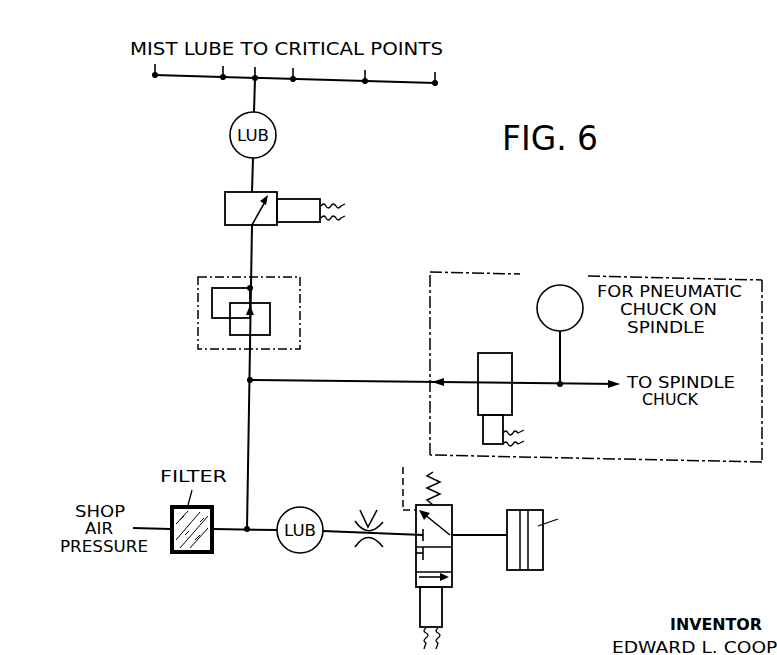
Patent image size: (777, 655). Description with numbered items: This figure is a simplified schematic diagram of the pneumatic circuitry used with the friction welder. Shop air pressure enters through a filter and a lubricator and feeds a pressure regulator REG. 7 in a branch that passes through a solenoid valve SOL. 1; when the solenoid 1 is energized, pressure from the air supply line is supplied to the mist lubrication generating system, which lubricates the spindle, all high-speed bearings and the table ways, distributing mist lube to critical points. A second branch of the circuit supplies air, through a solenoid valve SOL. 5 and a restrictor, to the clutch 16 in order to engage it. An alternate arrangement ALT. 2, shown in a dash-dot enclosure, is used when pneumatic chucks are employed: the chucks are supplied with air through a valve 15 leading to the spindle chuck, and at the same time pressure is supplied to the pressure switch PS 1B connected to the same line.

The solenoid SOL- 1 is at (295, 199).
The pressure regulator 7 is at (198, 308).
The pneumatic chuck alternative ALT- 2 is at (596, 359).
The pressure switch PS- 1B is at (560, 336).
The valve 15 is at (507, 400).
The solenoid valve SOL. 5 is at (442, 608).
The clutch 16 is at (513, 570).